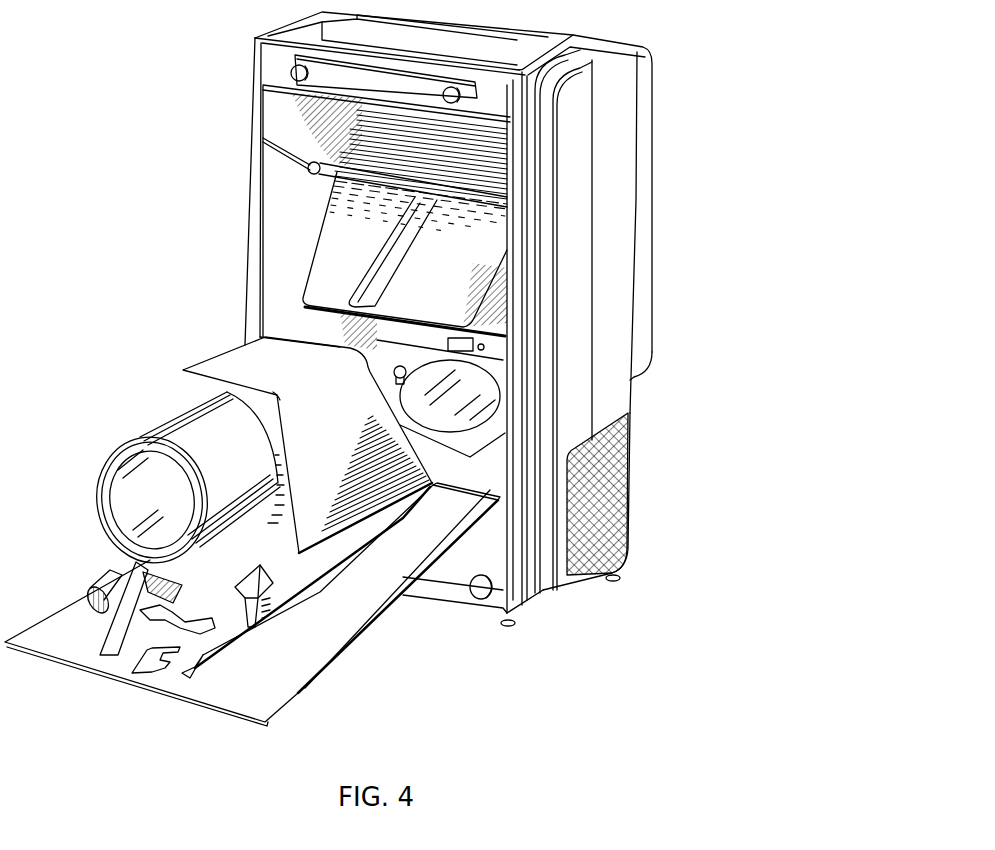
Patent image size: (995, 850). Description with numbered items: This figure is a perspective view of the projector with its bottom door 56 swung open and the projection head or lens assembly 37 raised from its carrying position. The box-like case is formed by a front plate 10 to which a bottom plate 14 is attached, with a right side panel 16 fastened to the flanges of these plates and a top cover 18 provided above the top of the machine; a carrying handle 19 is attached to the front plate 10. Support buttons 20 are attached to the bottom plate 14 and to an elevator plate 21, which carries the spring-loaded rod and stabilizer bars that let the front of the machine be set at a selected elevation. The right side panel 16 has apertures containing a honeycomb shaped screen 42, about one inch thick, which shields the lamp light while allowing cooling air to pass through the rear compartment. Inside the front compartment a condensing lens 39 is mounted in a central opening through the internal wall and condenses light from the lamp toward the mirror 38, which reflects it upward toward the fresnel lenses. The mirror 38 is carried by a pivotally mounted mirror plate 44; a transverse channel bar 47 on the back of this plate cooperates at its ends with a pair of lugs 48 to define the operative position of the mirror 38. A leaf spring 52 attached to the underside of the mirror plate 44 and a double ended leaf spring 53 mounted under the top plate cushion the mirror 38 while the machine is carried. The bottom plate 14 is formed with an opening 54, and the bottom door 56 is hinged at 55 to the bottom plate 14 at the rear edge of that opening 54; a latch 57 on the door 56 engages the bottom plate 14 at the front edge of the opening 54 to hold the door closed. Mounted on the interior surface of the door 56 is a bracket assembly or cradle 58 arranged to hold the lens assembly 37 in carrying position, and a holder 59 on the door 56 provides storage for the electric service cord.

The front plate 10 is at (633, 53).
The bottom plate 14 is at (507, 548).
The right side panel 16 is at (617, 298).
The top cover 18 is at (638, 355).
The carrying handle 19 is at (520, 53).
The support buttons 20 is at (290, 73).
The elevator plate 21 is at (465, 107).
The projection lens assembly 37 is at (185, 430).
The mirror 38 is at (327, 308).
The condensing lens 39 is at (410, 389).
The honeycomb shaped screen 42 is at (615, 520).
The mirror plate 44 is at (318, 279).
The transverse channel bar 47 is at (312, 163).
The lugs 48 is at (308, 173).
The leaf spring 52 is at (383, 287).
The double ended leaf spring 53 is at (507, 350).
The opening 54 is at (258, 245).
The hinge 55 is at (341, 588).
The bottom door 56 is at (290, 683).
The latch 57 is at (150, 660).
The cradle 58 is at (197, 622).
The holder 59 is at (100, 578).